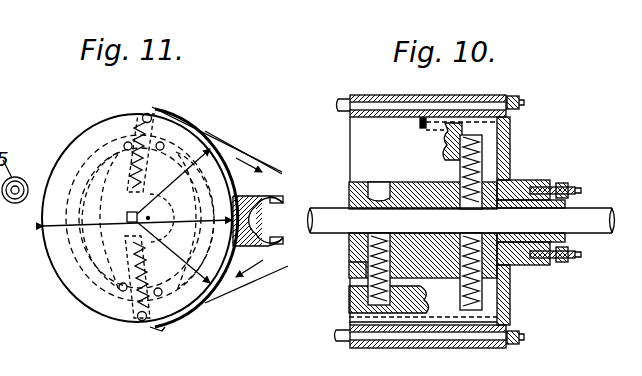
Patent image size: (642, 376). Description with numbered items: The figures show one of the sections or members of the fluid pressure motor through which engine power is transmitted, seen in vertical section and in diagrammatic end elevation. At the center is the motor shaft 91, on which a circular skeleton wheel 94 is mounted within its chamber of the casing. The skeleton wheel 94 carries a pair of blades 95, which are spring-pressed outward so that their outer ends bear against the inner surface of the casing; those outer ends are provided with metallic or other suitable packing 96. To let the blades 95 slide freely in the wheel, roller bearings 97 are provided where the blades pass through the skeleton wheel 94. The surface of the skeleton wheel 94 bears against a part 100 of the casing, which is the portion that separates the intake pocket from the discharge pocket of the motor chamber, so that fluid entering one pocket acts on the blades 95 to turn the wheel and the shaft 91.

In FIG. 10, the motor shaft 91 is at (598, 230).
In FIG. 11, the circular skeleton wheel 94 is at (78, 265).
In FIG. 10, the circular skeleton wheel 94 is at (349, 255).
In FIG. 11, the blade 95 is at (137, 128).
In FIG. 10, the blade 95 is at (487, 151).
In FIG. 11, the packing 96 is at (146, 113).
In FIG. 10, the packing 96 is at (420, 127).
In FIG. 10, the roller bearing 97 is at (349, 318).
In FIG. 11, the casing part 100 is at (256, 194).